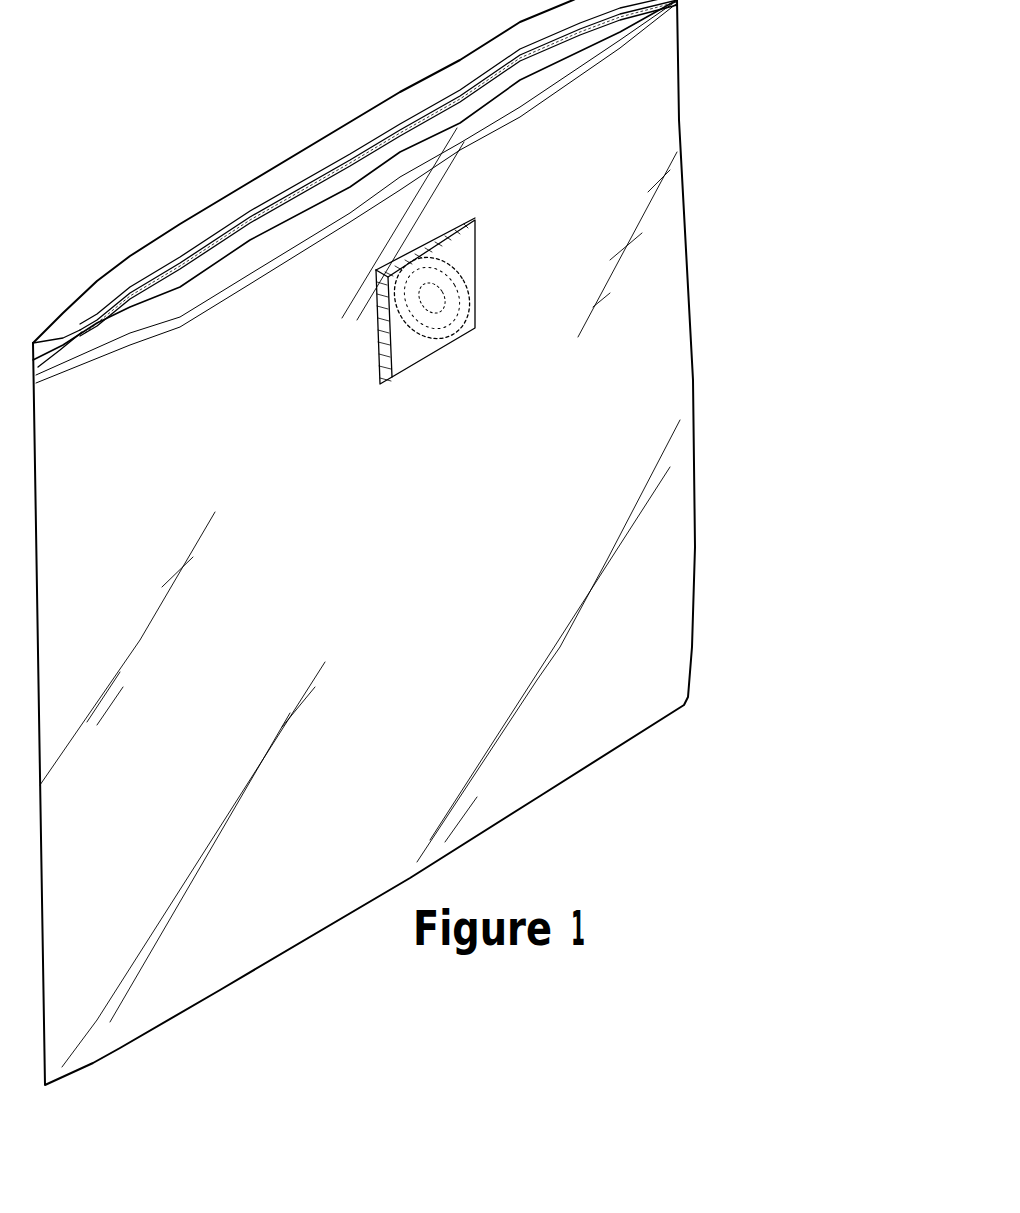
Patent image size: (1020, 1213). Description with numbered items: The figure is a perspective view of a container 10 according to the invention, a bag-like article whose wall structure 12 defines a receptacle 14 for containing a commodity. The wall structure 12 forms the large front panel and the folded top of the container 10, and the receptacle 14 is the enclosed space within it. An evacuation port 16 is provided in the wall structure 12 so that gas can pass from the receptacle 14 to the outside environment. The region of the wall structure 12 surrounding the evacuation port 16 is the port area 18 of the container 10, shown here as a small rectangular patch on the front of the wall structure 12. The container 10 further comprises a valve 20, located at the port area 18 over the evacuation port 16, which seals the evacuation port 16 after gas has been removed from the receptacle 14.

The container 10 is at (708, 430).
The wall structure 12 is at (645, 580).
The receptacle 14 is at (305, 202).
The evacuation port 16 is at (445, 350).
The port area 18 is at (462, 316).
The valve 20 is at (474, 291).